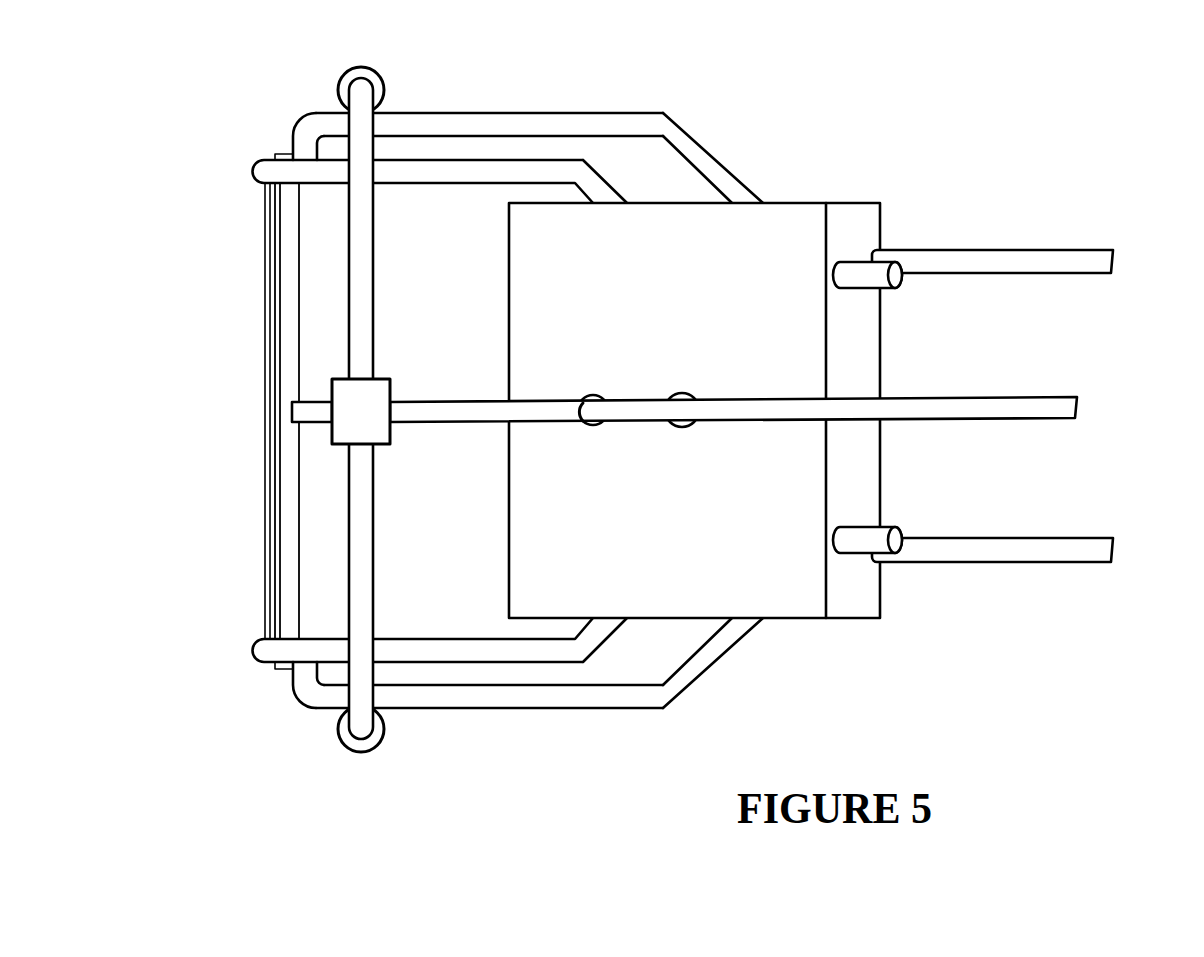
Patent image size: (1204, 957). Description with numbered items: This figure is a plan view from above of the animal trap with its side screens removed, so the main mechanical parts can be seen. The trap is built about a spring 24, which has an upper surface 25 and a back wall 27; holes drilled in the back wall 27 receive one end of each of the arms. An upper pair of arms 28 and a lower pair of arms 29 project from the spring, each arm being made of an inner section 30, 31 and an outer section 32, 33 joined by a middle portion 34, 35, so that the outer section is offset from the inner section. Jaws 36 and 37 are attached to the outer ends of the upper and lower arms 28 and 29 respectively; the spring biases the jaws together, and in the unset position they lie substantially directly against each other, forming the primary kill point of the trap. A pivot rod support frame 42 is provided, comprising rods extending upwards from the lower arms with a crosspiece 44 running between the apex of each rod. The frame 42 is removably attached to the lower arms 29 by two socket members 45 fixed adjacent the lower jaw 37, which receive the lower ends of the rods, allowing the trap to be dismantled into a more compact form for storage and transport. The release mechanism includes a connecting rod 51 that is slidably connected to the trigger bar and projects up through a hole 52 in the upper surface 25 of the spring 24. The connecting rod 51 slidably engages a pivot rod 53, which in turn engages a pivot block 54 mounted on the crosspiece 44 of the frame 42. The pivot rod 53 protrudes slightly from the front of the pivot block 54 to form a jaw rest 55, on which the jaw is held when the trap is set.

The spring 24 is at (839, 401).
The upper surface 25 is at (806, 232).
The back wall 27 is at (866, 233).
The upper pair of arms 28 is at (585, 681).
The lower pair of arms 29 is at (468, 390).
The inner section 30 is at (858, 543).
The inner section 31 is at (1098, 265).
The outer section 32 is at (497, 650).
The outer section 33 is at (514, 118).
The middle portion 34 is at (607, 624).
The middle portion 35 is at (690, 138).
The jaw 36 is at (265, 530).
The jaw 37 is at (282, 598).
The pivot rod support frame 42 is at (311, 414).
The crosspiece 44 is at (362, 283).
The socket member 45 is at (376, 73).
The connecting rod 51 is at (598, 396).
The hole 52 is at (686, 393).
The pivot rod 53 is at (1065, 398).
The pivot block 54 is at (349, 406).
The jaw rest 55 is at (305, 415).